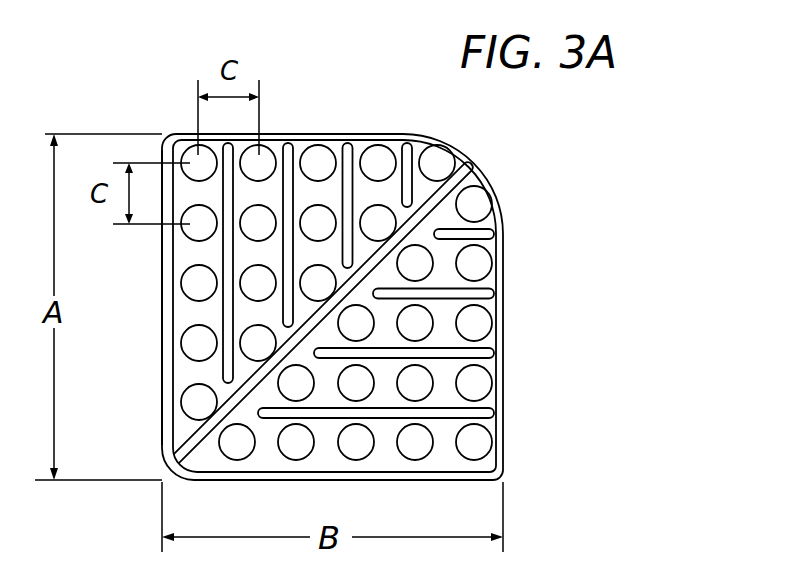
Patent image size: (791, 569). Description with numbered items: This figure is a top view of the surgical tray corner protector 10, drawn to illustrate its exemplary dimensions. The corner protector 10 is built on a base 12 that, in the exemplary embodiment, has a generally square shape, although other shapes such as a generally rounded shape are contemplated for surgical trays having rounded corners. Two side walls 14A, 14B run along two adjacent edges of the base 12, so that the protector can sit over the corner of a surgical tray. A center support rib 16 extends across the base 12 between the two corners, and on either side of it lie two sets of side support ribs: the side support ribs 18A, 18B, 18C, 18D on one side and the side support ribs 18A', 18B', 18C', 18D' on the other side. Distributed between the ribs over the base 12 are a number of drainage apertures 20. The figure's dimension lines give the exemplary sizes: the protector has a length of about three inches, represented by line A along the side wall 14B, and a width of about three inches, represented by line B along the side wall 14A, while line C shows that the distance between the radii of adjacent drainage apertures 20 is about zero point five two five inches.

The surgical tray corner protector 10 is at (644, 184).
The base 12 is at (538, 336).
The side wall 14A is at (310, 481).
The side wall 14B is at (162, 356).
The center support rib 16 is at (473, 170).
The side support rib 18A is at (263, 230).
The side support rib 18B is at (317, 202).
The side support rib 18C is at (373, 173).
The side support rib 18D is at (428, 142).
The side support rib 18A' is at (416, 440).
The side support rib 18B' is at (449, 329).
The side support rib 18C' is at (479, 287).
The side support rib 18D' is at (520, 226).
The drainage apertures 20 is at (476, 387).